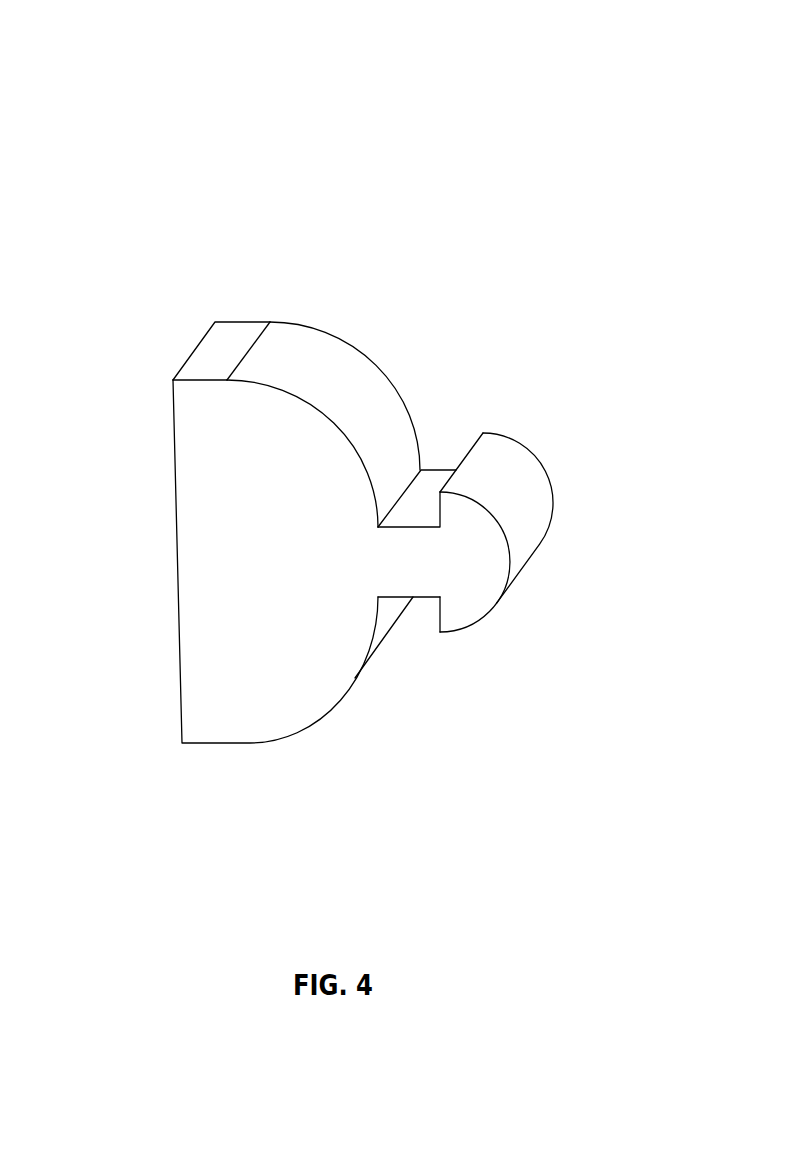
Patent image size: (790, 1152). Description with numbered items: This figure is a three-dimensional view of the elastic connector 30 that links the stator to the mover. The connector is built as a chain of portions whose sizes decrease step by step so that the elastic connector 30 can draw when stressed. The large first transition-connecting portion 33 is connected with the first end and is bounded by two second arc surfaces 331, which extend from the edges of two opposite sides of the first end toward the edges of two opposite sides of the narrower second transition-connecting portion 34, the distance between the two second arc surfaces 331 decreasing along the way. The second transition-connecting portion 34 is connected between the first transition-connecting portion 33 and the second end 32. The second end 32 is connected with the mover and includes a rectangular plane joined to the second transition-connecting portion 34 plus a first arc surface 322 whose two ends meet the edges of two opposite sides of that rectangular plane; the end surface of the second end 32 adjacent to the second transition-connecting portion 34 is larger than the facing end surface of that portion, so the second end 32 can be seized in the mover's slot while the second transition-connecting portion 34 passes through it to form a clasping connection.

The elastic connector 30 is at (335, 42).
The first transition-connecting portion 33 is at (208, 622).
The second arc surface 331 is at (320, 382).
The second transition-connecting portion 34 is at (419, 580).
The second end 32 is at (490, 580).
The first arc surface 322 is at (493, 470).